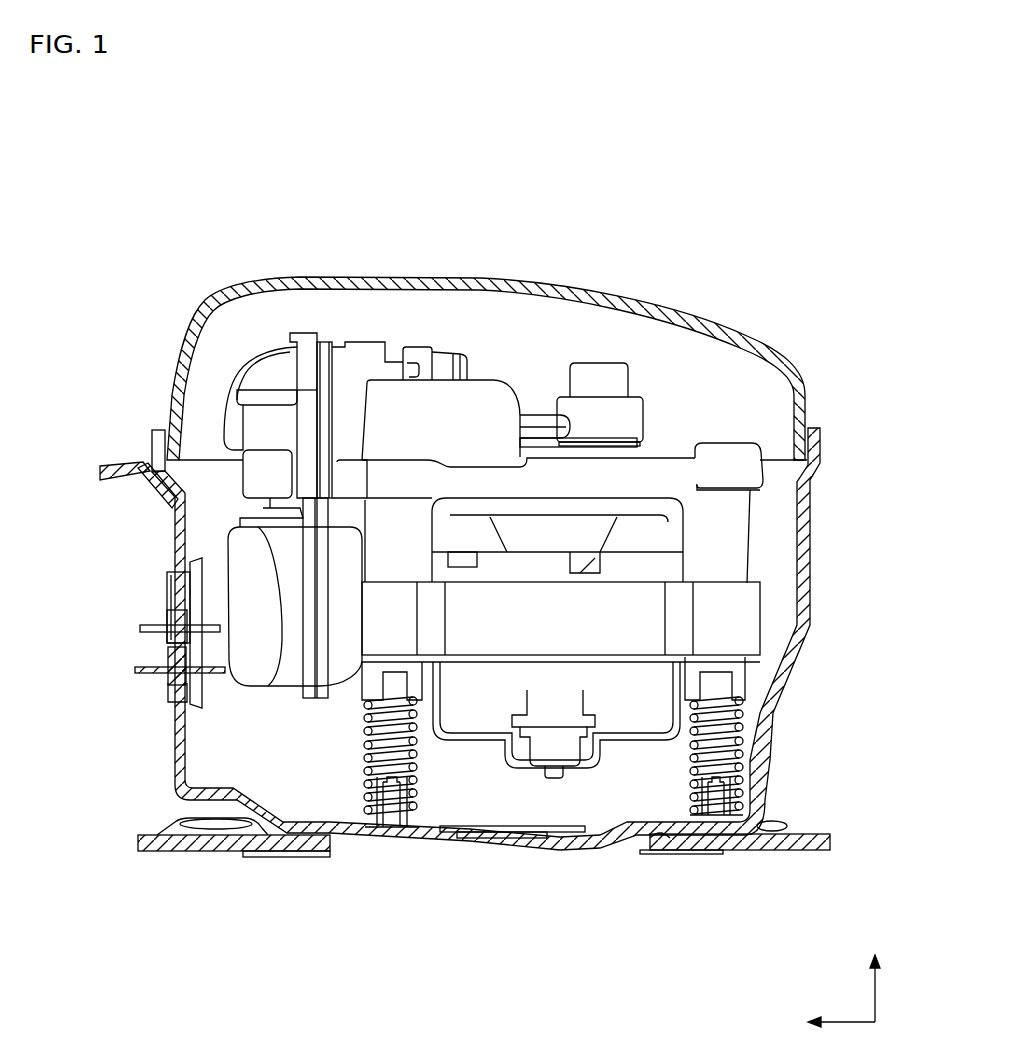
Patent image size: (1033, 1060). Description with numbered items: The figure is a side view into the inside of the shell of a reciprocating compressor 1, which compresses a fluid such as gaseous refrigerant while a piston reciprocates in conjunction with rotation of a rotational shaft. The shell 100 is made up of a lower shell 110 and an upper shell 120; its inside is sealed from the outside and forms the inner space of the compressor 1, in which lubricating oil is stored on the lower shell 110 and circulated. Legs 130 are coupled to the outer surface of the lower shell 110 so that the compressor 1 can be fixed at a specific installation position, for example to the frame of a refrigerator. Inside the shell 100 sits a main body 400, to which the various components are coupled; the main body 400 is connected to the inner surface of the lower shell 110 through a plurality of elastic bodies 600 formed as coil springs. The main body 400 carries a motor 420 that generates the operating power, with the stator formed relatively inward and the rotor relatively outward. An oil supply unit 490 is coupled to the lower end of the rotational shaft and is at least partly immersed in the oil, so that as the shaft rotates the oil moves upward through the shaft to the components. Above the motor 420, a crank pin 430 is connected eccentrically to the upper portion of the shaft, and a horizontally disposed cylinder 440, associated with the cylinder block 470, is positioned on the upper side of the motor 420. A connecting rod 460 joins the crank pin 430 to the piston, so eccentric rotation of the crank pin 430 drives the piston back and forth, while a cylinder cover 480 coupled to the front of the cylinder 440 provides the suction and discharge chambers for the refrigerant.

The reciprocating compressor 1 is at (139, 145).
The shell 100 is at (907, 361).
The lower shell 110 is at (820, 483).
The upper shell 120 is at (818, 369).
The legs 130 is at (152, 845).
The main body 400 is at (204, 752).
The motor 420 is at (765, 613).
The crank pin 430 is at (607, 370).
The cylinder 440 is at (460, 213).
The connecting rod 460 is at (533, 413).
The cylinder block 470 is at (441, 392).
The cylinder cover 480 is at (268, 348).
The oil supply unit 490 is at (550, 758).
The elastic body 600 is at (742, 749).